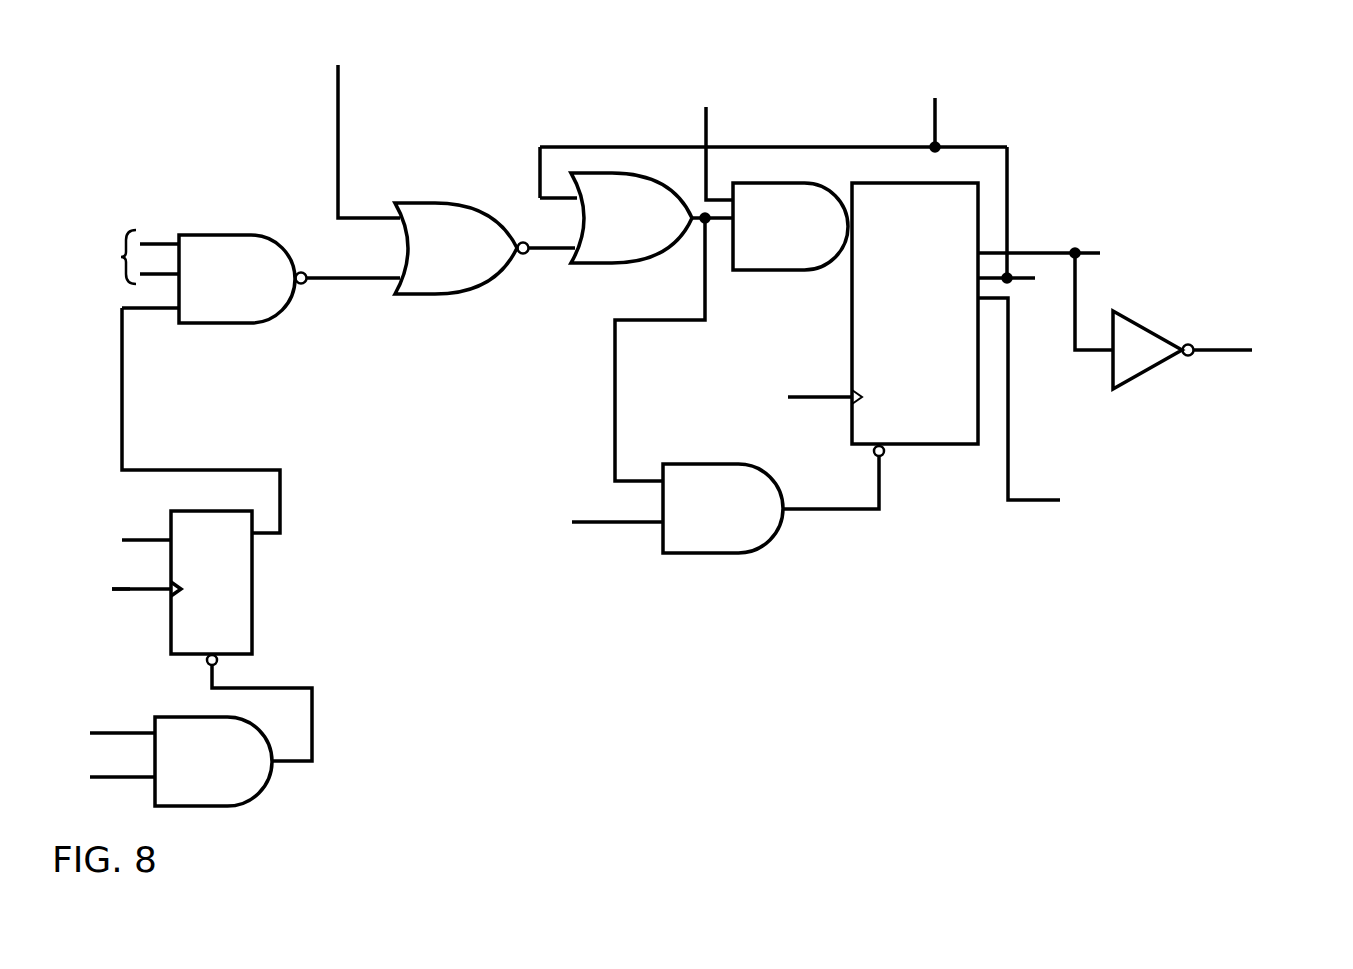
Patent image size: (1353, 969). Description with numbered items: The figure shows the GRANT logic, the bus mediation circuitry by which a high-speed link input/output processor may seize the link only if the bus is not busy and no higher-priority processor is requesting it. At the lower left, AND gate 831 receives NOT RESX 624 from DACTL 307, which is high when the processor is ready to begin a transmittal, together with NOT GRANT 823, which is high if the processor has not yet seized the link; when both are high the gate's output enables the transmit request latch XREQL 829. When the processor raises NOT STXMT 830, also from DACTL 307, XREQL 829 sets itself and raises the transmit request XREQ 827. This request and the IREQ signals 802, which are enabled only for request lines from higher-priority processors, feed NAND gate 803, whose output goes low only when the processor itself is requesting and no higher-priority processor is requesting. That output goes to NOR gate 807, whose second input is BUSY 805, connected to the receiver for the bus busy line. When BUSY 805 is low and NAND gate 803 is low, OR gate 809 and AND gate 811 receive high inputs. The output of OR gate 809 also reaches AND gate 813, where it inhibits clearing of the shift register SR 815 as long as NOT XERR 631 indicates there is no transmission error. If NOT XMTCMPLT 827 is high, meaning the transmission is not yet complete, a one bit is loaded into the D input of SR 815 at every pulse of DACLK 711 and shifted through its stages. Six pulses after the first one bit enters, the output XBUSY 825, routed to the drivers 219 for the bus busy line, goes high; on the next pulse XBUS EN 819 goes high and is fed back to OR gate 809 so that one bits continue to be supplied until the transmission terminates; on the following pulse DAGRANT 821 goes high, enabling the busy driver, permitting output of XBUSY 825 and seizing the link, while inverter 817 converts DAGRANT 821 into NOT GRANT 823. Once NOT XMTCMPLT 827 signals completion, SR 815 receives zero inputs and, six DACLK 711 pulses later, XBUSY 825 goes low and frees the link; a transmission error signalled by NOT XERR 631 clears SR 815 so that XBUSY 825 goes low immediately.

The IREQ (0..2) signals 802 is at (113, 257).
The NAND gate 803 is at (289, 279).
The BUSY signal 805 is at (342, 129).
The NOR gate 807 is at (485, 248).
The OR gate 809 is at (636, 314).
The AND gate 811 is at (790, 226).
The AND gate 813 is at (773, 499).
The shift register 815 is at (915, 313).
The inverter 817 is at (1153, 350).
The XBUS EN signal 819 is at (1062, 214).
The DAGRANT signal 821 is at (1114, 296).
The NOT GRANT signal 823 is at (1337, 325).
The XBUSY signal 825 is at (1079, 406).
The transmit request (XREQ) / NOT XMTCMPLT signal 827 is at (806, 73).
The transmit request latch (XREQL) 829 is at (201, 636).
The NOT STXMT signal 830 is at (142, 602).
The AND gate 831 is at (213, 761).
The drivers 219 is at (828, 111).
The DACTL 307 is at (100, 629).
The NOT RESX signal 624 is at (97, 704).
The NOT XERR signal 631 is at (563, 502).
The DACLK 711 is at (783, 409).